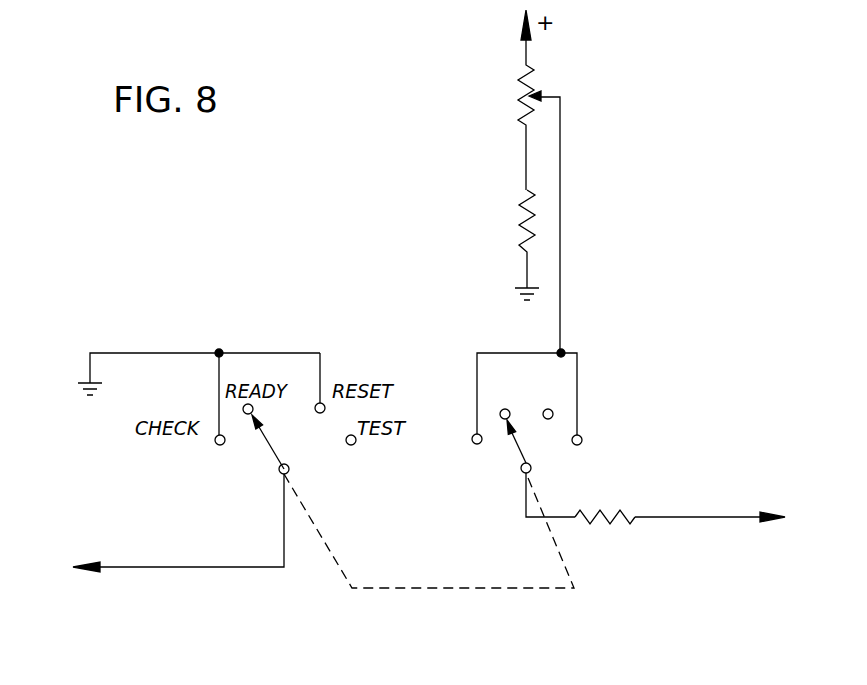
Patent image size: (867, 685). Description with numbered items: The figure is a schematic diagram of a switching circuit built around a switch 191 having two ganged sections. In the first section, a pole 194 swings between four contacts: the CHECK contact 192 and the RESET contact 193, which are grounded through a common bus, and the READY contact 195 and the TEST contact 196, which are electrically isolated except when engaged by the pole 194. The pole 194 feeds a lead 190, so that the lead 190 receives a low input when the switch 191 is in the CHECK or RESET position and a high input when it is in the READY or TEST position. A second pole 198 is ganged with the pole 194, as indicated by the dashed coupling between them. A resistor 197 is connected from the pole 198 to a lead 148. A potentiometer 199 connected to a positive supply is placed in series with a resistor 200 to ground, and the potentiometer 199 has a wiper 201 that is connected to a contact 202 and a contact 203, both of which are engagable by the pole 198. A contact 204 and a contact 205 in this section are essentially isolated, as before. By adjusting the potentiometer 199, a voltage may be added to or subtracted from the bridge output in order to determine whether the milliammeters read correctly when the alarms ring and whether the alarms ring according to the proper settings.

The lead 148 is at (688, 513).
The lead 190 is at (184, 549).
The switch 191 is at (170, 348).
The CHECK contact 192 is at (216, 444).
The RESET contact 193 is at (321, 402).
The pole 194 is at (270, 450).
The READY contact 195 is at (254, 407).
The TEST contact 196 is at (350, 446).
The resistor 197 is at (618, 508).
The pole 198 is at (520, 466).
The potentiometer 199 is at (562, 62).
The resistor 200 is at (520, 218).
The wiper 201 is at (541, 101).
The contact 202 is at (471, 438).
The contact 203 is at (583, 440).
The contact 204 is at (506, 408).
The contact 205 is at (552, 410).